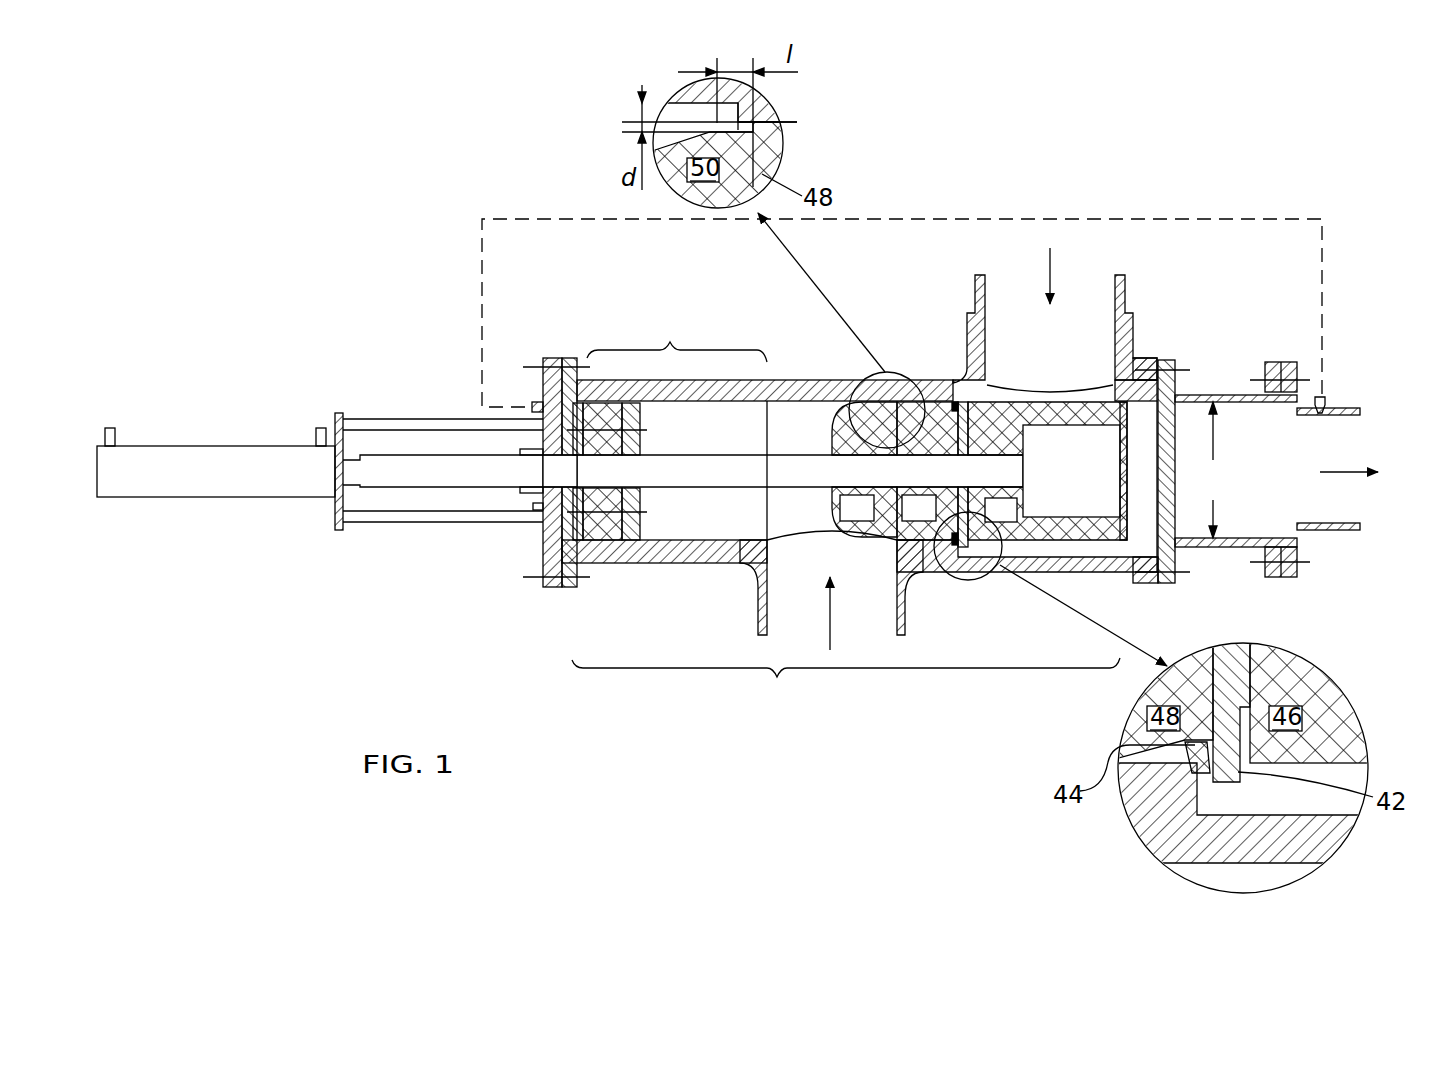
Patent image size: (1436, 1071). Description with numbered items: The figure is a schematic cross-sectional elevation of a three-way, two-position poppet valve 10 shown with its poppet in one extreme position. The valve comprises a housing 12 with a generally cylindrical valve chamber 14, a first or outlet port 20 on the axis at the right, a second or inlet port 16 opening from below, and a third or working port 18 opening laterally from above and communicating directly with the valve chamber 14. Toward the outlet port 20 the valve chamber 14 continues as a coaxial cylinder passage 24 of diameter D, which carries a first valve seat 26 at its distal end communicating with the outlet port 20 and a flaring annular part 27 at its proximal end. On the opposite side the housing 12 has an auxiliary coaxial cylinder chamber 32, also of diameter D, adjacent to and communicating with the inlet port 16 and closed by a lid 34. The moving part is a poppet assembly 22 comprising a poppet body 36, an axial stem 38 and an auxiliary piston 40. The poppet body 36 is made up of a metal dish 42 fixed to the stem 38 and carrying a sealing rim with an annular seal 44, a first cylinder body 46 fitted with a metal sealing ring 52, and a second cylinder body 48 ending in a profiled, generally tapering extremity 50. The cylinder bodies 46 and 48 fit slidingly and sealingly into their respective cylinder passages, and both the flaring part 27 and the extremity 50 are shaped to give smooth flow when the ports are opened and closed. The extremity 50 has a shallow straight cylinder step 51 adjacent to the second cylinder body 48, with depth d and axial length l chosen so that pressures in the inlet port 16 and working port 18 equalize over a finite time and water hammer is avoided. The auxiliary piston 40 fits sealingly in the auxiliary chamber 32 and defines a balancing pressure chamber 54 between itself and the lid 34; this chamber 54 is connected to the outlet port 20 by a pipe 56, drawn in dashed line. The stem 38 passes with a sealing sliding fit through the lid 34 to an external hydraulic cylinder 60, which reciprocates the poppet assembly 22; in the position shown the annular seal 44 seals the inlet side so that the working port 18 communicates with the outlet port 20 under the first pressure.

The three-way, two-position poppet valve 10 is at (904, 211).
The housing 12 is at (812, 380).
The valve chamber 14 is at (1157, 483).
The second (inlet) port 16 is at (907, 620).
The third (working) port 18 is at (1127, 300).
The first (outlet) port 20 is at (1340, 408).
The poppet assembly 22 is at (846, 683).
The coaxial cylinder passage 24 is at (1263, 518).
The first valve seat 26 is at (1310, 380).
The flaring annular part 27 is at (1175, 535).
The auxiliary coaxial cylinder chamber 32 is at (677, 340).
The lid 34 is at (553, 358).
The poppet body 36 is at (1001, 386).
The axial stem 38 is at (734, 482).
The auxiliary piston 40 is at (617, 540).
The metal dish 42 is at (976, 580).
The annular seal 44 is at (933, 382).
The first cylinder body 46 is at (1014, 522).
The second cylinder body 48 is at (933, 518).
The profiled, generally tapering, extremity 50 is at (871, 518).
The shallow straight cylinder step 51 is at (753, 153).
The metal sealing ring 52 is at (1133, 527).
The balancing pressure chamber 54 is at (567, 358).
The pipe 56 is at (1107, 219).
The external hydraulic cylinder 60 is at (236, 486).